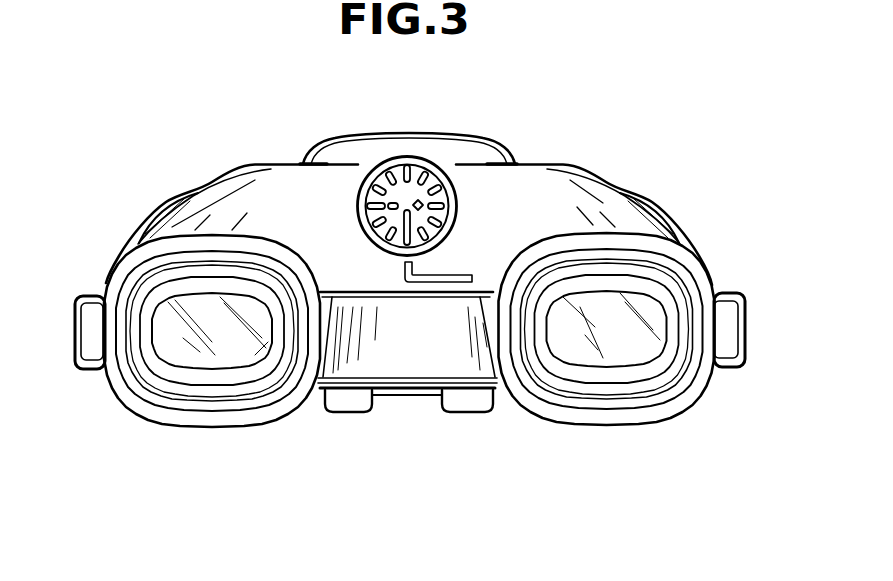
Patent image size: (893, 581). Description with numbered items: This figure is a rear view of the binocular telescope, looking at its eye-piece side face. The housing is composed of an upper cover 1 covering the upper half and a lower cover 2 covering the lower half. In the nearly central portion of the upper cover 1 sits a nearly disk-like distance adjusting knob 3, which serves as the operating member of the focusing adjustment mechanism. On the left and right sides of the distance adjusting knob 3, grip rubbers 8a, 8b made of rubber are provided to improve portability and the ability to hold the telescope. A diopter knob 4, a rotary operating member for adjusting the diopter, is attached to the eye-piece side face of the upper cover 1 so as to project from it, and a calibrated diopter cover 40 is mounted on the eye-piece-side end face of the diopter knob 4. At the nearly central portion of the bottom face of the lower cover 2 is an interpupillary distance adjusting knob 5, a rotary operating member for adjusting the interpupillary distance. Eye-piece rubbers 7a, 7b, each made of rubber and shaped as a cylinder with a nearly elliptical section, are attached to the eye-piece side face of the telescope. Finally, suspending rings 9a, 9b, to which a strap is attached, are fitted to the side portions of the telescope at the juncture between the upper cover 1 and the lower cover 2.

The upper cover 1 is at (603, 203).
The lower cover 2 is at (347, 358).
The distance adjusting knob 3 is at (477, 136).
The diopter knob 4 is at (407, 156).
The calibrated diopter cover 40 is at (447, 213).
The interpupillary distance adjusting knob 5 is at (472, 402).
The eye-piece rubber 7a is at (685, 398).
The eye-piece rubber 7b is at (143, 390).
The grip rubber 8a is at (684, 239).
The grip rubber 8b is at (121, 247).
The suspending ring 9a is at (742, 317).
The suspending ring 9b is at (75, 333).